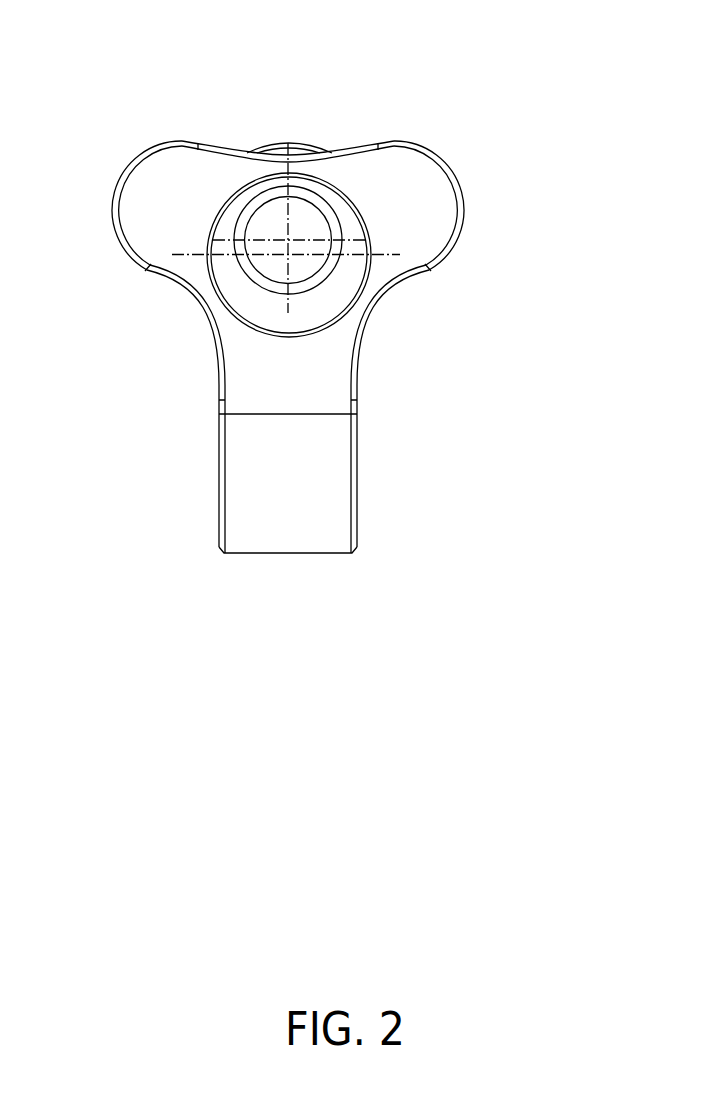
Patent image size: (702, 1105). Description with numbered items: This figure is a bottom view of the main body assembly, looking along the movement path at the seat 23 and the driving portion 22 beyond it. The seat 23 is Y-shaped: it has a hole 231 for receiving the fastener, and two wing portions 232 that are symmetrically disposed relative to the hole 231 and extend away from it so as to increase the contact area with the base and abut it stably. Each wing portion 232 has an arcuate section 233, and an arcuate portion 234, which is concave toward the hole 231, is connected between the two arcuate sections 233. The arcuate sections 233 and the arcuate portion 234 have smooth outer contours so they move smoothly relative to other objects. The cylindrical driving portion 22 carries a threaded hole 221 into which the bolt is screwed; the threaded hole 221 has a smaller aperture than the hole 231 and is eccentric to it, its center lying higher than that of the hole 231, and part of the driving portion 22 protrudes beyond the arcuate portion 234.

The driving portion 22 is at (288, 143).
The threaded hole 221 is at (297, 260).
The seat 23 is at (205, 300).
The hole 231 is at (339, 307).
The wing portion 232 is at (432, 208).
The arcuate section 233 is at (131, 160).
The arcuate portion 234 is at (341, 150).